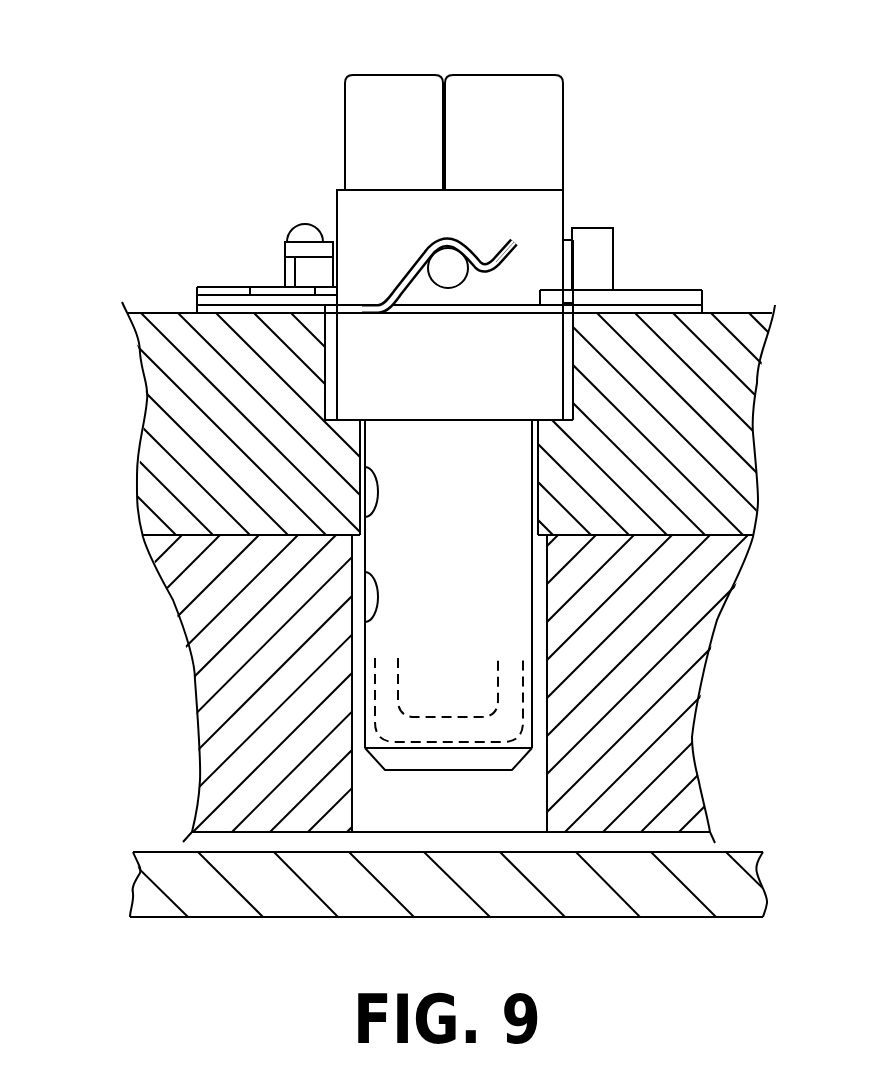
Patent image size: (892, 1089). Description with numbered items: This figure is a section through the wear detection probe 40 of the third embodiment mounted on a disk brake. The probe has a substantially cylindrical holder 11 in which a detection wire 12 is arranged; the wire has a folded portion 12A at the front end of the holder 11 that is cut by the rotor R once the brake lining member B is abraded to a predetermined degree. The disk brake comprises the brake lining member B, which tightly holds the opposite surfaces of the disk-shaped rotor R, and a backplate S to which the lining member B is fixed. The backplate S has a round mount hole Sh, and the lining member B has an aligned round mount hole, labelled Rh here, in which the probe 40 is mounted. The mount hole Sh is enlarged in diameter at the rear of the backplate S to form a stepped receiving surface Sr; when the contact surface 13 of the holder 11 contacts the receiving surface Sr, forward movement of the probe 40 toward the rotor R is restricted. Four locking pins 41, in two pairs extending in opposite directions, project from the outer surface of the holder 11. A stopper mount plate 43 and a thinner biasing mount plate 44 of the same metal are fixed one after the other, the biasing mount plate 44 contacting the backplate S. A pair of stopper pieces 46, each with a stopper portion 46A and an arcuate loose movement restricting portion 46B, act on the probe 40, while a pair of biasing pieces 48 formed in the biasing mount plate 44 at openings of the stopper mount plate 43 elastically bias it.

The wear detection probe 40 is at (662, 95).
The holder 11 is at (553, 243).
The detection wire 12 is at (520, 688).
The folded portion 12A is at (462, 729).
The contact surface 13 is at (353, 423).
The locking pins 41 is at (307, 262).
The stopper mount plate 43 is at (645, 297).
The biasing mount plate 44 is at (695, 318).
The stopper pieces 46 is at (402, 270).
The stopper portion 46A is at (472, 239).
The arcuate loose movement restricting portion 46B is at (508, 266).
The biasing pieces 48 is at (287, 277).
The backplate S is at (722, 470).
The mount hole Sh is at (357, 525).
The receiving surface Sr is at (543, 420).
The brake lining member B is at (677, 592).
The base hole Rh is at (360, 620).
The rotor R is at (733, 878).